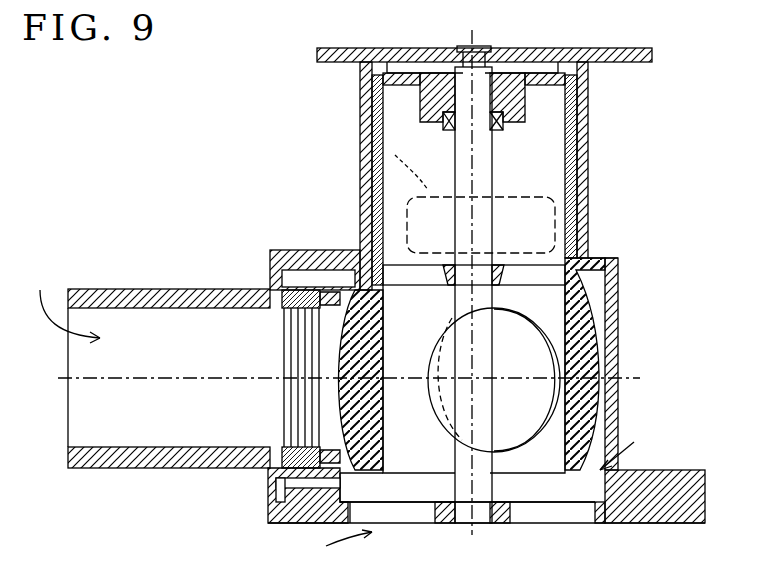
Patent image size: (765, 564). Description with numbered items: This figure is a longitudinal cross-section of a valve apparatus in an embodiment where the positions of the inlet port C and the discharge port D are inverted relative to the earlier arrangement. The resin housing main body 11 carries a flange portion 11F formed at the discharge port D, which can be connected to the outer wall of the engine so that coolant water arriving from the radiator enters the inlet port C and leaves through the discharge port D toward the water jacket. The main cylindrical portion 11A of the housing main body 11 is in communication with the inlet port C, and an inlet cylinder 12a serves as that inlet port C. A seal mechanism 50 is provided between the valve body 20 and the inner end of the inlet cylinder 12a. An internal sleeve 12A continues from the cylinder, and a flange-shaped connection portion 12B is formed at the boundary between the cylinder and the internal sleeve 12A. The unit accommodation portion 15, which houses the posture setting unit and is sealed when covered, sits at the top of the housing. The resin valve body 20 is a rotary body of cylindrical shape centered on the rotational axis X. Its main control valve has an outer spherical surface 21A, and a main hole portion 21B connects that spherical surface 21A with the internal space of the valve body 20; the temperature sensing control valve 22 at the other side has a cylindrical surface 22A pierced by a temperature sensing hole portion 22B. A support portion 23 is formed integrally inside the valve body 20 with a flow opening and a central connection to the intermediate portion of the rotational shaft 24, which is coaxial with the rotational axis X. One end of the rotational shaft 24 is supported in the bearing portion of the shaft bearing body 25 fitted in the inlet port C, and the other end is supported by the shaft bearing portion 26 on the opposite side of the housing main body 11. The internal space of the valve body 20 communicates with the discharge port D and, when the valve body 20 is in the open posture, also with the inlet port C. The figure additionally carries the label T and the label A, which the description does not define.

The housing main body 11 is at (618, 326).
The main cylindrical portion 11A is at (302, 250).
The flange portion 11F is at (700, 486).
The internal sleeve 12A is at (284, 283).
The connection portion 12B is at (278, 490).
The inlet cylinder 12a is at (165, 468).
The unit accommodation portion 15 is at (420, 52).
The valve body 20 is at (592, 292).
The spherical surface 21A is at (334, 394).
The main hole portion 21B is at (527, 455).
The temperature sensing control valve 22 is at (298, 128).
The cylindrical surface 22A is at (378, 188).
The temperature sensing hole portion 22B is at (362, 152).
The support portion 23 is at (386, 290).
The rotational shaft 24 is at (455, 450).
The shaft bearing body 25 is at (600, 524).
The shaft bearing portion 26 is at (505, 75).
The seal mechanism 50 is at (352, 440).
The rotational axis X is at (471, 269).
The pipe axis T is at (339, 379).
The inlet port C is at (66, 304).
The direction A is at (623, 445).
The discharge port D is at (338, 543).